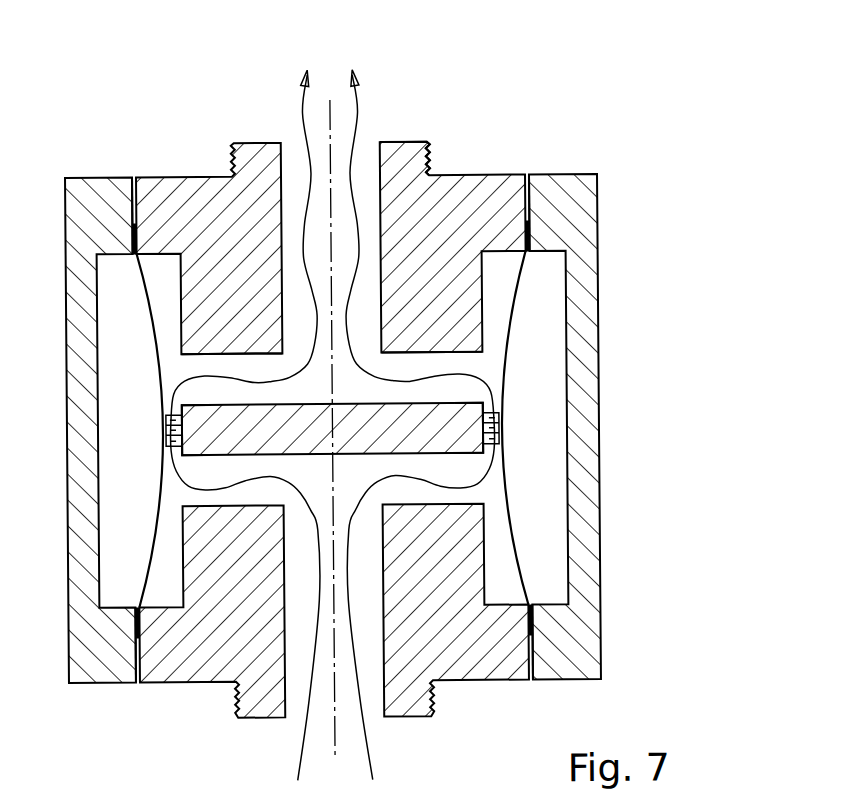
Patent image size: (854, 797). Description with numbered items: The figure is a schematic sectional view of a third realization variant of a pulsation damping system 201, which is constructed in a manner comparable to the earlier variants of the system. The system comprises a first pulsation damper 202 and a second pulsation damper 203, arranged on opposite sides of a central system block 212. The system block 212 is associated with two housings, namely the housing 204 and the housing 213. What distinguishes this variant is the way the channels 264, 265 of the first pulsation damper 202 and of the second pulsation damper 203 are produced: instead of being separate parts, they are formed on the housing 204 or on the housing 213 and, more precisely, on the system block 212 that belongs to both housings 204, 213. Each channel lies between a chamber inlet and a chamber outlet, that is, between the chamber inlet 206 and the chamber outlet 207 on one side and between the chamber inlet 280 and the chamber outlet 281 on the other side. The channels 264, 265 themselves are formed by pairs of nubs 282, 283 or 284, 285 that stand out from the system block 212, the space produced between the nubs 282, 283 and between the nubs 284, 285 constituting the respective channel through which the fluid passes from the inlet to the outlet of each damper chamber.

The pulsation damping system 201 is at (583, 88).
The first pulsation damper 202 is at (578, 143).
The second pulsation damper 203 is at (121, 140).
The housing 204 is at (510, 118).
The chamber inlet 206 is at (413, 487).
The chamber outlet 207 is at (422, 363).
The system block 212 is at (462, 198).
The housing 213 is at (165, 122).
The channel 264 is at (500, 428).
The channel 265 is at (165, 430).
The chamber inlet 280 is at (258, 488).
The chamber outlet 281 is at (245, 367).
The nub 282 is at (482, 418).
The nub 283 is at (482, 444).
The nub 284 is at (183, 418).
The nub 285 is at (184, 442).